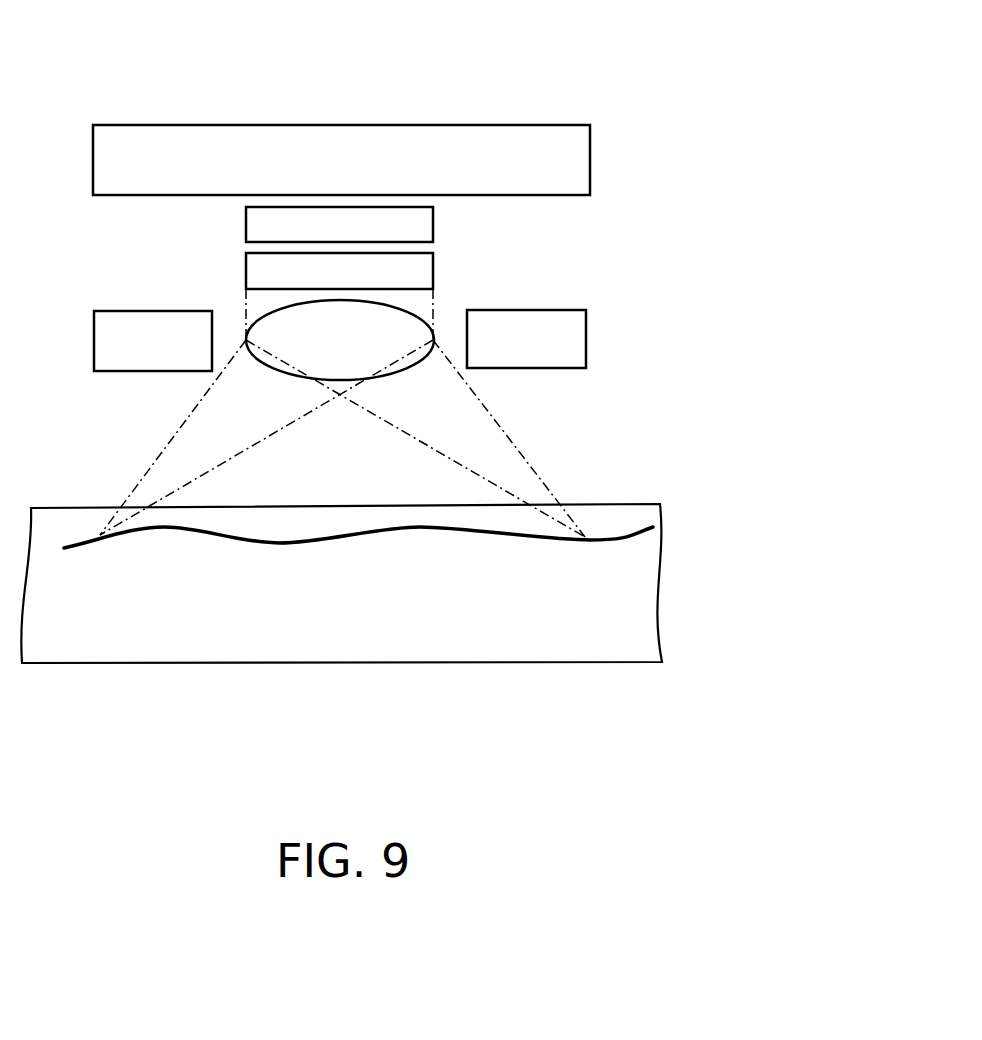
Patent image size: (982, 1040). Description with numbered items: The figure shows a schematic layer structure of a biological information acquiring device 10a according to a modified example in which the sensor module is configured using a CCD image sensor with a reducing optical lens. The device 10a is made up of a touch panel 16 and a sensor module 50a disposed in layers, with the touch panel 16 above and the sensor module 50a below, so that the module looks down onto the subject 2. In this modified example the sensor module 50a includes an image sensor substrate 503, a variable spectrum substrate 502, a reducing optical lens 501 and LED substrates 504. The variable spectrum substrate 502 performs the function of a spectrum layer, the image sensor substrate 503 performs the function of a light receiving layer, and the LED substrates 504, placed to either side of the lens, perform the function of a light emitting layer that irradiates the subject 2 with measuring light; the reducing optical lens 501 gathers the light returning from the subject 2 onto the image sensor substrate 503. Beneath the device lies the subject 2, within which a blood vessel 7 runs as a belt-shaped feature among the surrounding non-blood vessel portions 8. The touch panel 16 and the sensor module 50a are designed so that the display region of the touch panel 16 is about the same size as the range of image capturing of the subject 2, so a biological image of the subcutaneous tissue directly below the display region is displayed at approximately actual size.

The biological information acquiring device 10a is at (604, 76).
The touch panel 16 is at (490, 137).
The sensor module 50a is at (588, 241).
The image sensor substrate 503 is at (423, 231).
The variable spectrum substrate 502 is at (423, 271).
The reducing optical lens 501 is at (417, 315).
The LED substrates 504 is at (123, 371).
The subject 2 is at (513, 645).
The non-blood vessel portions 8 is at (611, 644).
The blood vessel 7 is at (286, 545).